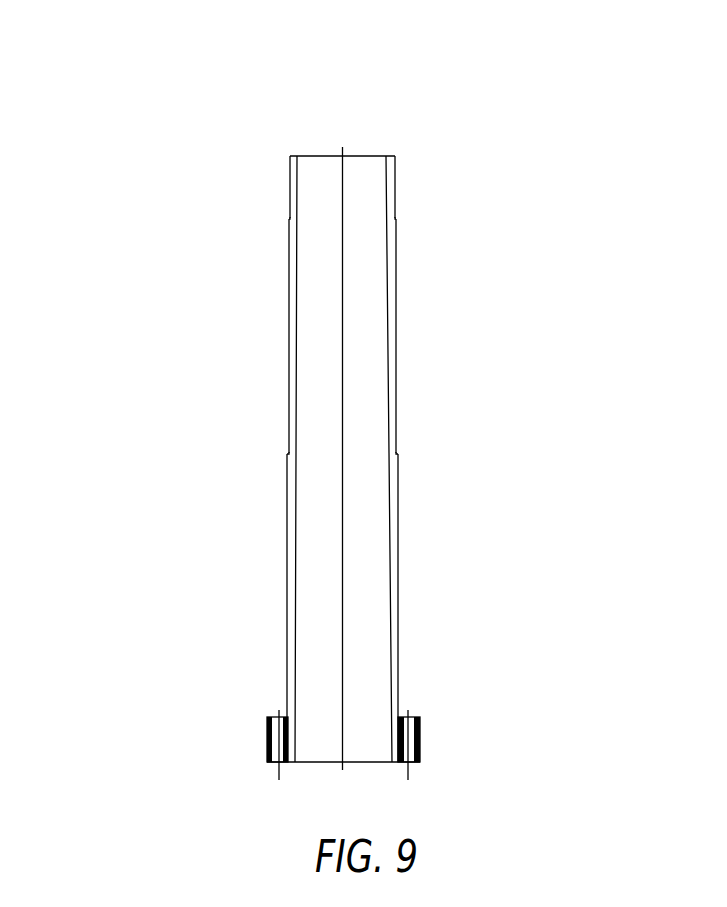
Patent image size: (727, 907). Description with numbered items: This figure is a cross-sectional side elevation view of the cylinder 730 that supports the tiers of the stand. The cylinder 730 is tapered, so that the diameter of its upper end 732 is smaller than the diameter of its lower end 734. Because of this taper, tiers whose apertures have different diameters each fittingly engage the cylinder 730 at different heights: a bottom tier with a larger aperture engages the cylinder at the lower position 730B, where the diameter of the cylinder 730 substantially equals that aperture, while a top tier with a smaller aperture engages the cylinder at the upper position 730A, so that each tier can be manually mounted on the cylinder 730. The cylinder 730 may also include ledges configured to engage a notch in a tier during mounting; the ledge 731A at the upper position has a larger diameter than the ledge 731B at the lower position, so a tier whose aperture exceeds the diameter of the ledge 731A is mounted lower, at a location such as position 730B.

The cylinder 730 is at (117, 127).
The upper end 732 is at (396, 158).
The position 730A is at (410, 202).
The ledge 731A is at (397, 218).
The position 730B is at (410, 437).
The ledge 731B is at (398, 452).
The lower end 734 is at (264, 668).